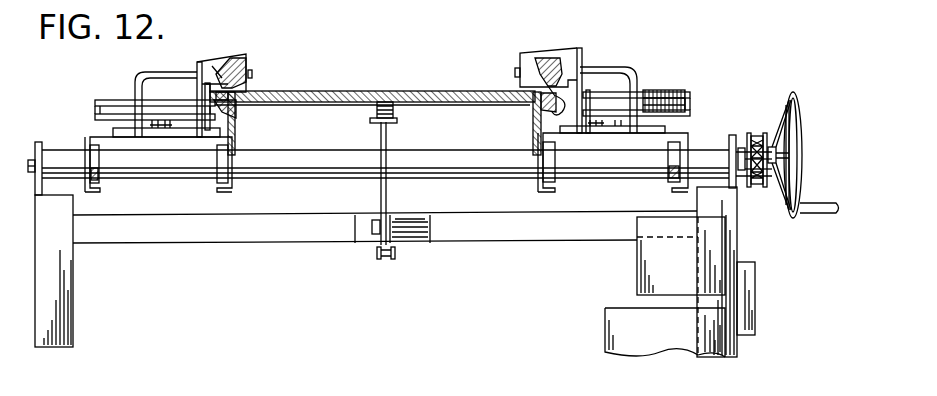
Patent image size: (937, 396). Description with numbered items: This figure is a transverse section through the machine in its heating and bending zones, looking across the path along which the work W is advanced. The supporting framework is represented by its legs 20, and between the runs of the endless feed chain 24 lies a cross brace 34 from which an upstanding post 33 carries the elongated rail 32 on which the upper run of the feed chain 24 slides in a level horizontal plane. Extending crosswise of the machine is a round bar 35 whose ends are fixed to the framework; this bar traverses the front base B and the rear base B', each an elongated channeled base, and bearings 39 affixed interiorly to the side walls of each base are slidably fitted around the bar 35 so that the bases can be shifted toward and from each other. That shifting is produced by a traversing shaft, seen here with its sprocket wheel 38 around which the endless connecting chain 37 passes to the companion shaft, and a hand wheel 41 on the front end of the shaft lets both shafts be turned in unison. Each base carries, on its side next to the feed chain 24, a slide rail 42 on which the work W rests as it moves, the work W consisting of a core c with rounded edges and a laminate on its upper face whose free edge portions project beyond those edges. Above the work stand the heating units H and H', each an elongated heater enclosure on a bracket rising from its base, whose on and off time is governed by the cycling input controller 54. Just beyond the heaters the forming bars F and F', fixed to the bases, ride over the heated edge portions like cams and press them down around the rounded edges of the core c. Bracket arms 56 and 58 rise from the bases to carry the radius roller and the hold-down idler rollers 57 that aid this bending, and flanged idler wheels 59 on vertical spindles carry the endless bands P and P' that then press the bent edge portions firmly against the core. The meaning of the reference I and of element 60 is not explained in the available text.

The legs 20 is at (75, 323).
The endless feed chain 24 is at (376, 108).
The elongated rail 32 is at (394, 112).
The posts 33 is at (381, 189).
The cross braces 34 is at (480, 213).
The round bars 35 is at (283, 172).
The endless connecting chain 37 is at (758, 187).
The sprocket wheels 38 is at (750, 132).
The bearings 39 is at (97, 180).
The hand wheel 41 is at (797, 98).
The slide rail 42 is at (236, 141).
The cycling input controller 54 is at (638, 269).
The bracket arm 56 is at (664, 90).
The hold-down idler rollers 57 is at (249, 68).
The bracket arm 58 is at (168, 72).
The flanged idler wheels 59 is at (104, 100).
The cylinder 60 is at (163, 136).
The front base B is at (622, 150).
The rear base B' is at (143, 152).
The forming bar F is at (529, 109).
The forming bar F' is at (234, 109).
The heating unit H is at (550, 72).
The heating unit H' is at (236, 57).
The indexing support I is at (329, 90).
The work W is at (388, 90).
The core c is at (458, 120).
The endless band P is at (646, 96).
The endless band P' is at (135, 98).